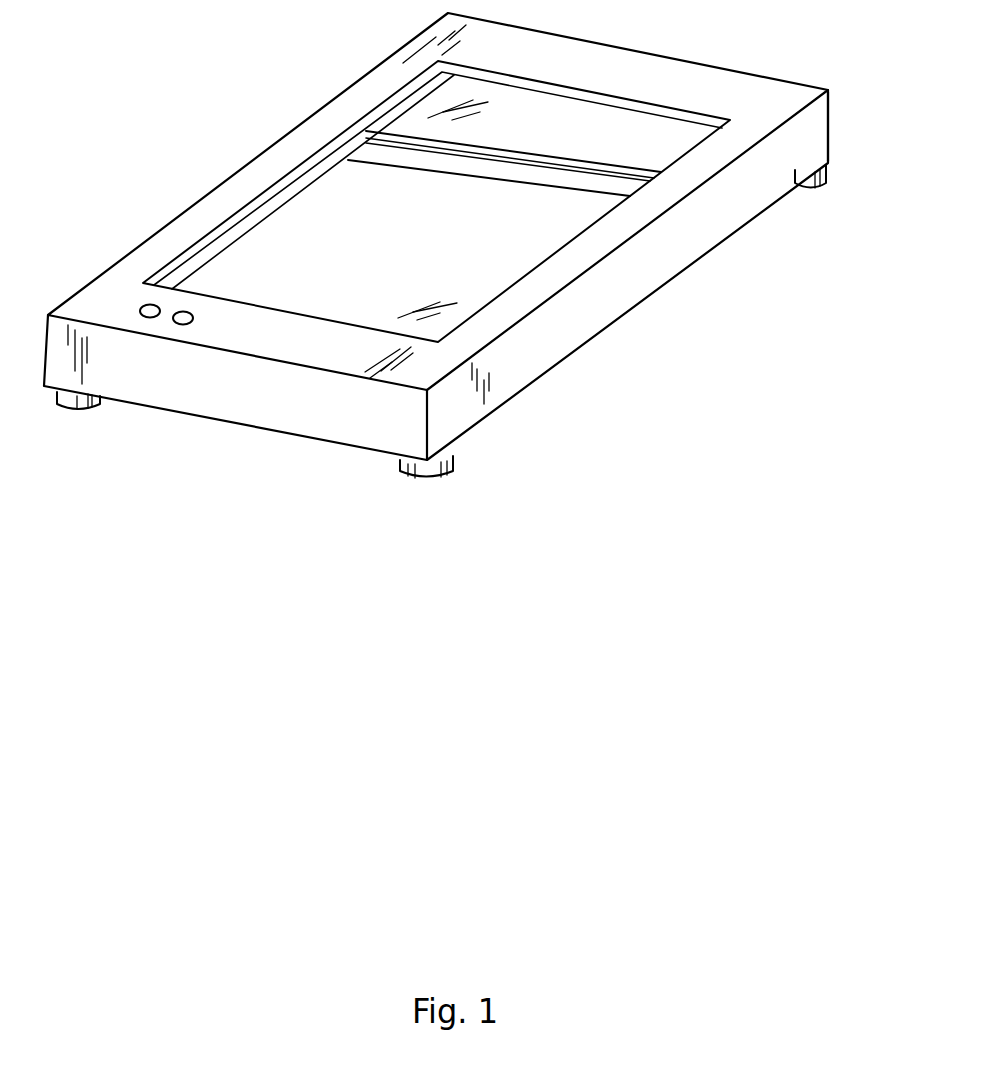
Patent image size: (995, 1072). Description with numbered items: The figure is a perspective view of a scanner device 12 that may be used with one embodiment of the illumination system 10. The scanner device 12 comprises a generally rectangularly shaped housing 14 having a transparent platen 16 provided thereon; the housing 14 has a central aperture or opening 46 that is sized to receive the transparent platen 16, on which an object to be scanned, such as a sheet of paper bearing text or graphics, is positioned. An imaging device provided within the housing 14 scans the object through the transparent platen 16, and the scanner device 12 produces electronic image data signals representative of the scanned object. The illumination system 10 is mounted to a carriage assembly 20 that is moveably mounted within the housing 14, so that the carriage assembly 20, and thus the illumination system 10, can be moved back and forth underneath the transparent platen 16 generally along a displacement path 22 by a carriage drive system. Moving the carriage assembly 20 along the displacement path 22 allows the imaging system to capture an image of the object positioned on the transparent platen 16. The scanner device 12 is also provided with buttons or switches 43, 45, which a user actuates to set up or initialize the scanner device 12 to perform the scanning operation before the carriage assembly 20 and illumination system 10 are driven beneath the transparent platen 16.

The illumination system 10 is at (290, 58).
The scanner device 12 is at (836, 137).
The housing 14 is at (640, 301).
The transparent platen 16 is at (665, 132).
The carriage assembly 20 is at (602, 165).
The displacement path 22 is at (358, 270).
The button or switch 43 is at (139, 310).
The button or switch 45 is at (193, 318).
The central aperture or opening 46 is at (510, 278).